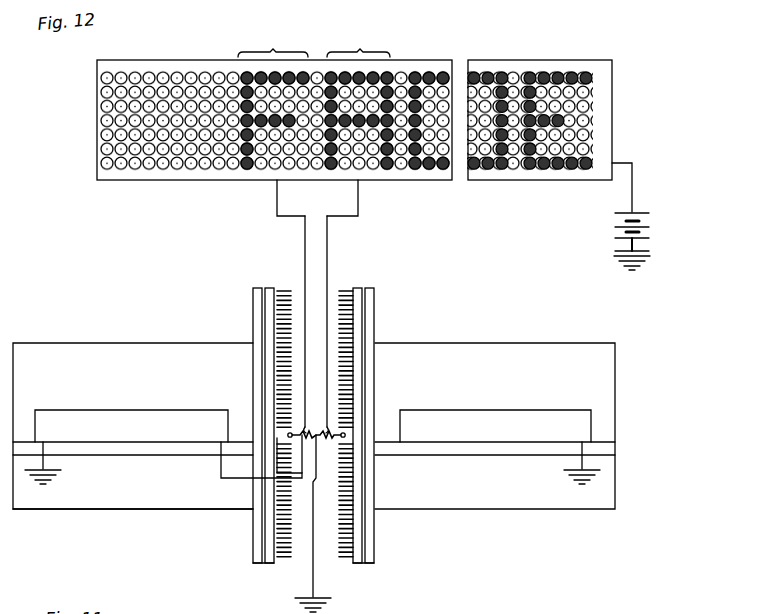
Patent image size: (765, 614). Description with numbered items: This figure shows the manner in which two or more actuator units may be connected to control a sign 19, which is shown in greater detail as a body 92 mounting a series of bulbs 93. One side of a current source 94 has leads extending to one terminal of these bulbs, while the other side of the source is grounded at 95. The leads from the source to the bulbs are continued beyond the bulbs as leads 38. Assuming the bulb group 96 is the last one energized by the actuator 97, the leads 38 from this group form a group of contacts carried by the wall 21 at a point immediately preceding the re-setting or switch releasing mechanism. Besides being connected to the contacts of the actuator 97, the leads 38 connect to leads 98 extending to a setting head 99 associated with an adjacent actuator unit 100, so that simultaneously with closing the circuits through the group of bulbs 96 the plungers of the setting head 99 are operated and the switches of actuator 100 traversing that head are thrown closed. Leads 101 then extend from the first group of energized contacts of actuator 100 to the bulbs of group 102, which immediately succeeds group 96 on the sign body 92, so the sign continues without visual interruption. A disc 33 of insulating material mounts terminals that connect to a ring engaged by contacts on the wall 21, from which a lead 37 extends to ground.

The body 92 is at (192, 64).
The group of bulbs 102 is at (273, 98).
The bulb group 96 is at (387, 98).
The bulbs 93 is at (477, 75).
The sign 19 is at (596, 58).
The current source 94 is at (624, 206).
The ground 95 is at (626, 265).
The leads 38 is at (360, 205).
The leads 101 is at (304, 248).
The disc 33 is at (252, 320).
The actuator 97 is at (523, 331).
The setting head 99 is at (138, 395).
The leads 98 is at (219, 473).
The actuator unit 100 is at (143, 505).
The lead 37 is at (320, 576).
The wall 21 is at (268, 565).